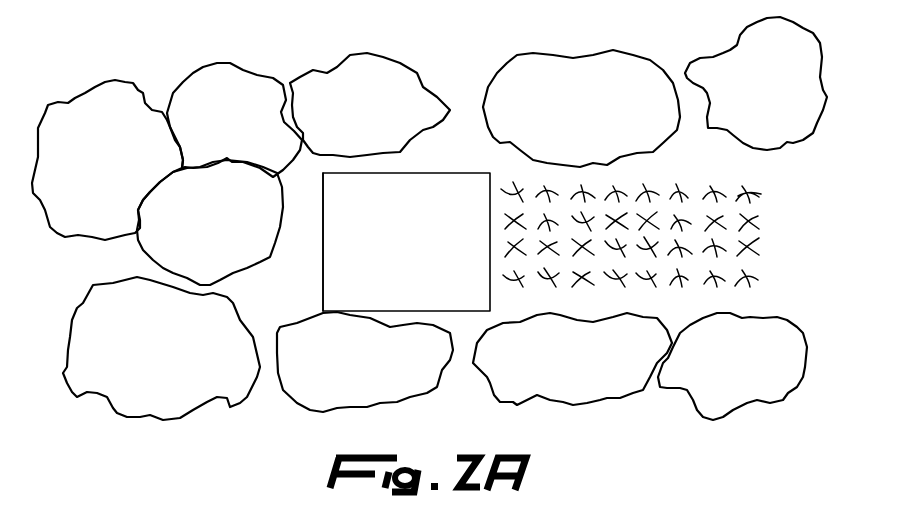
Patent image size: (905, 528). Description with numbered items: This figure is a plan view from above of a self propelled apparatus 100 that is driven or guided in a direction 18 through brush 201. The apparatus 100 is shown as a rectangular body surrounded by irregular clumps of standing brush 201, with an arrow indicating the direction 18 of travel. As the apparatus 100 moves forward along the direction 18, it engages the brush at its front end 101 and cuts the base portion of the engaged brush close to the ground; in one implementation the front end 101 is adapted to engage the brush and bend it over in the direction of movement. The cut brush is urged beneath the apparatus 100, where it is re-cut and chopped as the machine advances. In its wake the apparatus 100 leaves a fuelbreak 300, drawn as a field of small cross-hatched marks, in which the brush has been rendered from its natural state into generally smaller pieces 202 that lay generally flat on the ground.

The brush 201 is at (158, 76).
The direction 18 is at (222, 285).
The self propelled apparatus 100 is at (417, 251).
The front end 101 is at (323, 188).
The fuelbreak 300 is at (772, 231).
The smaller pieces 202 is at (757, 193).